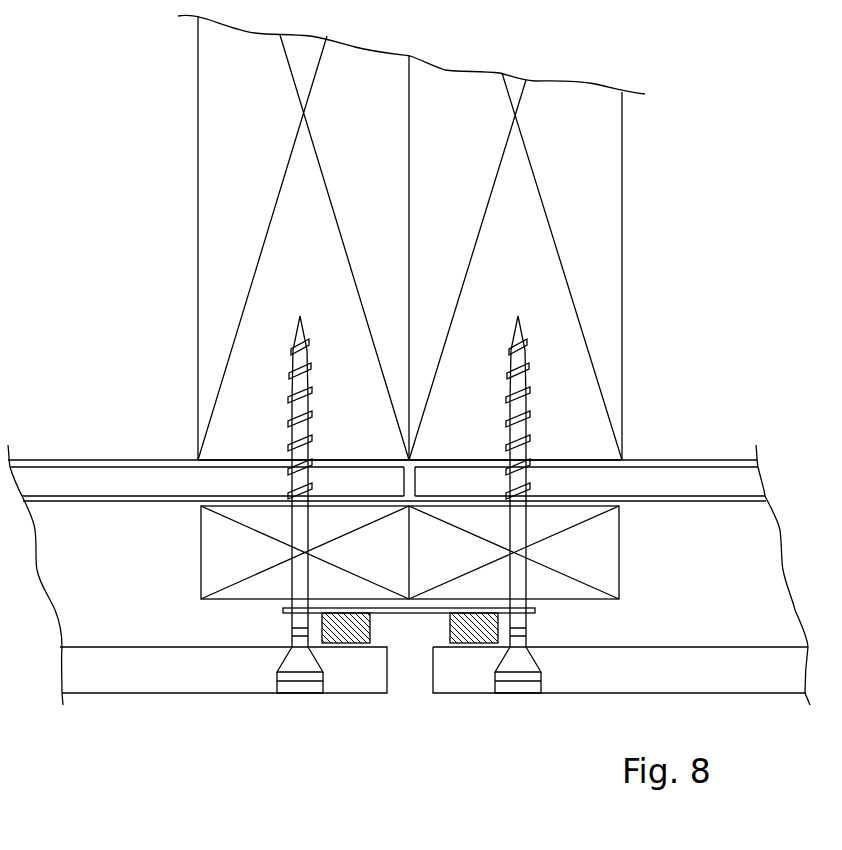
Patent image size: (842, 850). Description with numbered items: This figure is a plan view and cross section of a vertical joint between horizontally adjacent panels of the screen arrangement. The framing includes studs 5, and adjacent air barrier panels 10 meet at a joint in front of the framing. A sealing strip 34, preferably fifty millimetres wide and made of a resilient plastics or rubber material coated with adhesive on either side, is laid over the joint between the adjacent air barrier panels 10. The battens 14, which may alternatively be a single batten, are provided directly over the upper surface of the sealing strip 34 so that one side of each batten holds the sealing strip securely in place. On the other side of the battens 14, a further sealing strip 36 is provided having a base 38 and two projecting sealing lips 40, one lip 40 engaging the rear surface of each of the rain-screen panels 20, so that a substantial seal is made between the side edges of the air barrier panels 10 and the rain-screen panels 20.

The stud 5 is at (314, 282).
The air barrier panel 10 is at (172, 495).
The batten 14 is at (244, 568).
The rain-screen panel 20 is at (144, 683).
The sealing strip 34 is at (452, 498).
The further sealing strip 36 is at (410, 630).
The base 38 is at (537, 612).
The sealing lip 40 is at (349, 644).